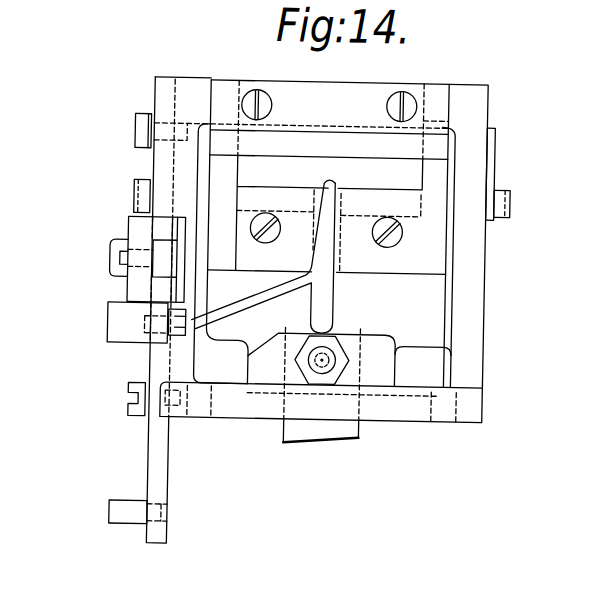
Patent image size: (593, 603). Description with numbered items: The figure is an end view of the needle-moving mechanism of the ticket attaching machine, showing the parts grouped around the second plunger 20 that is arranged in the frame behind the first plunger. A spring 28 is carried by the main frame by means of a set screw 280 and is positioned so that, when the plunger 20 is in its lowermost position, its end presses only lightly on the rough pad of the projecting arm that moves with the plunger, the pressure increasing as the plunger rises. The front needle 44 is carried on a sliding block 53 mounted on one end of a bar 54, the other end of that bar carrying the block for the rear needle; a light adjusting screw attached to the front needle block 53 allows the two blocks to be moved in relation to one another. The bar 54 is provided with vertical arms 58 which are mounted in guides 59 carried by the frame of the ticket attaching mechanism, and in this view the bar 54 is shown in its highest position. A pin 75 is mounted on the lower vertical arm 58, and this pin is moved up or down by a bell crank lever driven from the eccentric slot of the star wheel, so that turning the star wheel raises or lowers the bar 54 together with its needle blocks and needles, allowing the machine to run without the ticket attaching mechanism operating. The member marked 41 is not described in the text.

The second plunger 20 is at (321, 436).
The spring 28 is at (149, 171).
The set screw 280 is at (132, 194).
The cross bar 41 is at (431, 146).
The front needle 44 is at (329, 183).
The front needle block 53 is at (115, 329).
The bar 54 is at (160, 250).
The vertical arm 58 is at (160, 74).
The guide 59 is at (146, 420).
The pin 75 is at (135, 522).